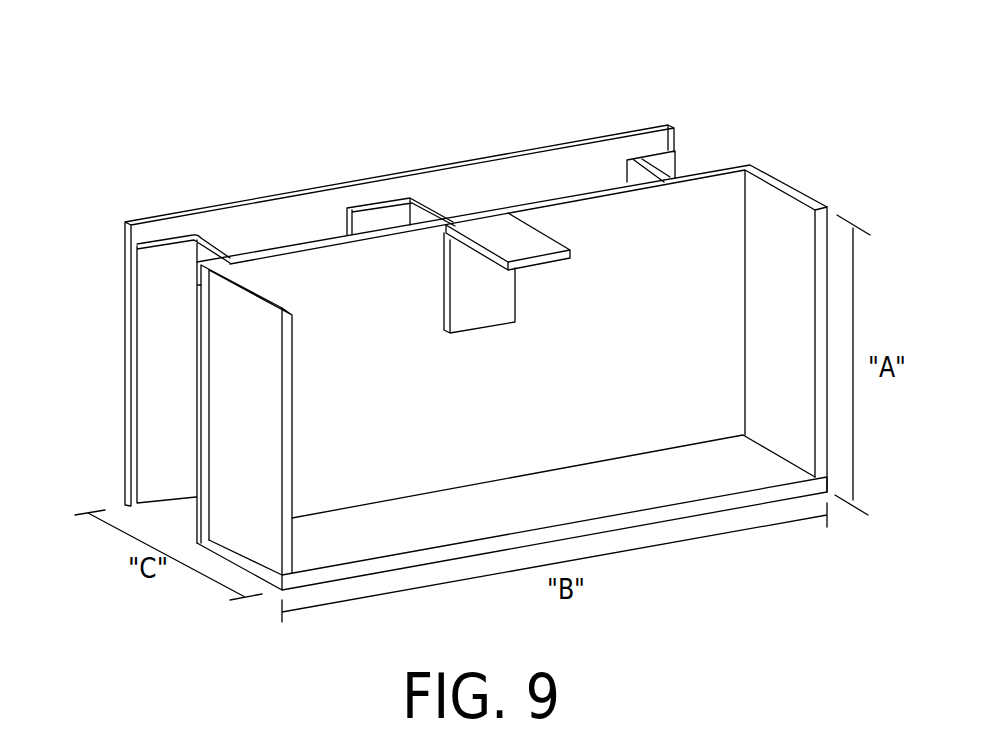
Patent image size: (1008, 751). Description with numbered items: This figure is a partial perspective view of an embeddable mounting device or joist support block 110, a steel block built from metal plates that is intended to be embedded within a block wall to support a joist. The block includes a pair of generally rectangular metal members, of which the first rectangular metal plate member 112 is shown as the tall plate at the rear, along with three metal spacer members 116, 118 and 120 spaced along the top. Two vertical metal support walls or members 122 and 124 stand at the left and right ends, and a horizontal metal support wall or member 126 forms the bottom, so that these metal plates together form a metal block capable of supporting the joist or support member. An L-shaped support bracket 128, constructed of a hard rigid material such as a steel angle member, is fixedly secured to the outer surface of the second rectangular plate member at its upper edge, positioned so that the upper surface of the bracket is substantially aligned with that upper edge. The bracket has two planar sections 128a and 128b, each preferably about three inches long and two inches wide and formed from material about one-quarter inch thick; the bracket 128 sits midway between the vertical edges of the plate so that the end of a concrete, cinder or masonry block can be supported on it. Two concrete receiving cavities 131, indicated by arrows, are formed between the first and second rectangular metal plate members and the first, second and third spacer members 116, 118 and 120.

The embeddable mounting device or joist support block 110 is at (745, 72).
The first rectangular metal plate member 112 is at (240, 200).
The first spacer member 116 is at (162, 258).
The second spacer member 118 is at (398, 190).
The third spacer member 120 is at (668, 167).
The vertical metal support wall 122 is at (228, 405).
The vertical metal support wall 124 is at (793, 216).
The horizontal metal support wall 126 is at (387, 540).
The L-shaped support bracket 128 is at (571, 202).
The planar section of bracket 128a is at (516, 298).
The planar section of bracket 128b is at (547, 231).
The concrete receiving cavities 131 is at (287, 205).